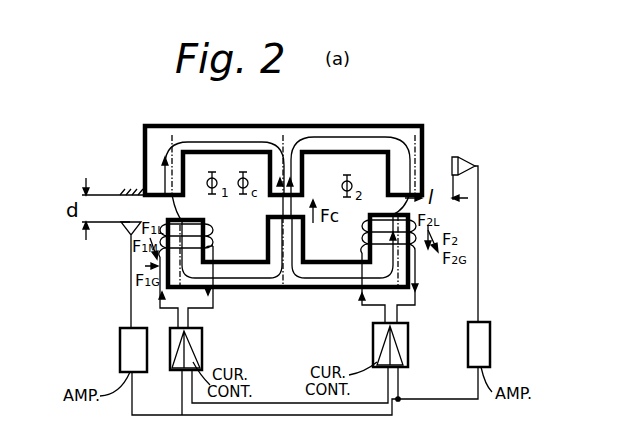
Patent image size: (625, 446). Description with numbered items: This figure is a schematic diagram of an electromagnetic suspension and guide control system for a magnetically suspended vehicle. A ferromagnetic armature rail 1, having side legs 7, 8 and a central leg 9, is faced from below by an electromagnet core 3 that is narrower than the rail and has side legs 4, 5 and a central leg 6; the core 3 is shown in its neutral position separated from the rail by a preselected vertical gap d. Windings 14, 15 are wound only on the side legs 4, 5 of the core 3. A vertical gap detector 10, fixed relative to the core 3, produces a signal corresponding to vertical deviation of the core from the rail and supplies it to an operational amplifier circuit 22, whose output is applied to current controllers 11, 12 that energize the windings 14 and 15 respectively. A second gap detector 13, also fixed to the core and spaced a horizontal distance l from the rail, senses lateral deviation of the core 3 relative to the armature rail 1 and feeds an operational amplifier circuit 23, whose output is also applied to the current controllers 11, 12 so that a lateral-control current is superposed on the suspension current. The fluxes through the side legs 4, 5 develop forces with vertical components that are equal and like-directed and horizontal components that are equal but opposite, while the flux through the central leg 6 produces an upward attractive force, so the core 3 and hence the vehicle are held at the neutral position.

The armature rail 1 is at (378, 126).
The electromagnet core 3 is at (295, 288).
The side leg 4 is at (204, 217).
The side leg 5 is at (365, 227).
The central leg 6 is at (305, 246).
The side leg 7 is at (146, 158).
The side leg 8 is at (390, 162).
The central leg 9 is at (301, 162).
The vertical gap detector 10 is at (121, 234).
The current controller 11 is at (203, 352).
The current controller 12 is at (409, 346).
The second gap detector 13 is at (460, 159).
The winding 14 is at (208, 243).
The winding 15 is at (374, 214).
The operational amplifier circuit 22 is at (120, 353).
The operational amplifier circuit 23 is at (491, 345).